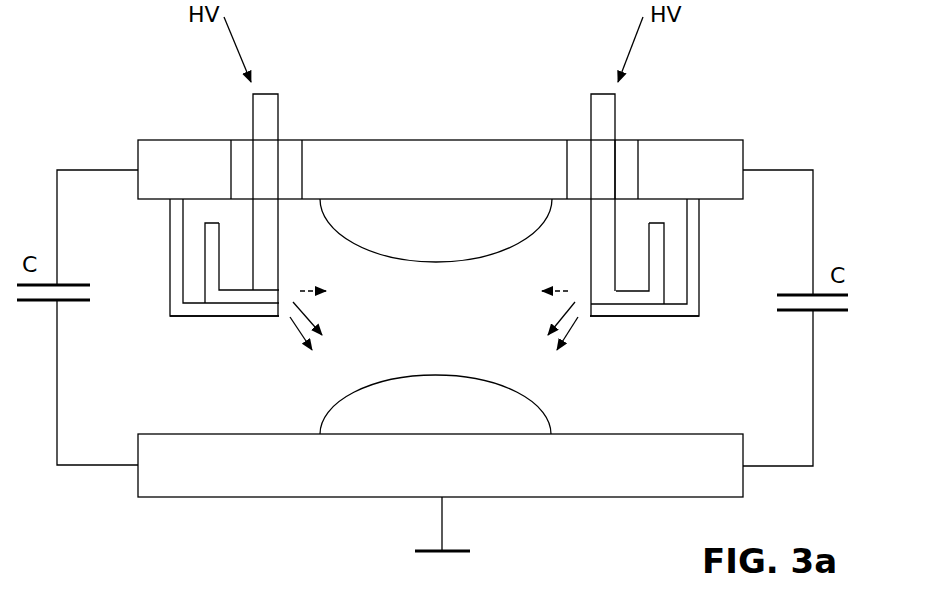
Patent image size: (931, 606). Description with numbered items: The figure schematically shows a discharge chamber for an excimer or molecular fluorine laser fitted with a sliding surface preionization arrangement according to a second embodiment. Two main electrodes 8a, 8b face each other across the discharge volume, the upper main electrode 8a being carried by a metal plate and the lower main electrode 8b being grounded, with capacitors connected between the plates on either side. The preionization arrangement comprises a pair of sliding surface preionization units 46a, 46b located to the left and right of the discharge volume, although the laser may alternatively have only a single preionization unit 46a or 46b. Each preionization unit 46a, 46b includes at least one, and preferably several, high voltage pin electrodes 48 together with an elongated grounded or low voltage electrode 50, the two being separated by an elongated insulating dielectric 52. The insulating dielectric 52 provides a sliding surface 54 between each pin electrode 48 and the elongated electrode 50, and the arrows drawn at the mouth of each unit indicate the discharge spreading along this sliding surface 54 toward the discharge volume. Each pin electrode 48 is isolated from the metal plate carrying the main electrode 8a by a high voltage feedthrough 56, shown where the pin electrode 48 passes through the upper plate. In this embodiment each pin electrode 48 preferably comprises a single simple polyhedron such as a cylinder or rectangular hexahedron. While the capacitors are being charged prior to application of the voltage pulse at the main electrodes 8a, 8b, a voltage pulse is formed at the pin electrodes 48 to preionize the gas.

The main electrode 8a is at (417, 217).
The main electrode 8b is at (472, 405).
The sliding surface preionization unit 46a is at (233, 329).
The sliding surface preionization unit 46b is at (636, 329).
The high voltage pin electrode 48 is at (265, 272).
The elongated grounded or low voltage electrode 50 is at (203, 316).
The insulating dielectric 52 is at (210, 251).
The sliding surface 54 is at (285, 294).
The high voltage feedthrough 56 is at (622, 165).